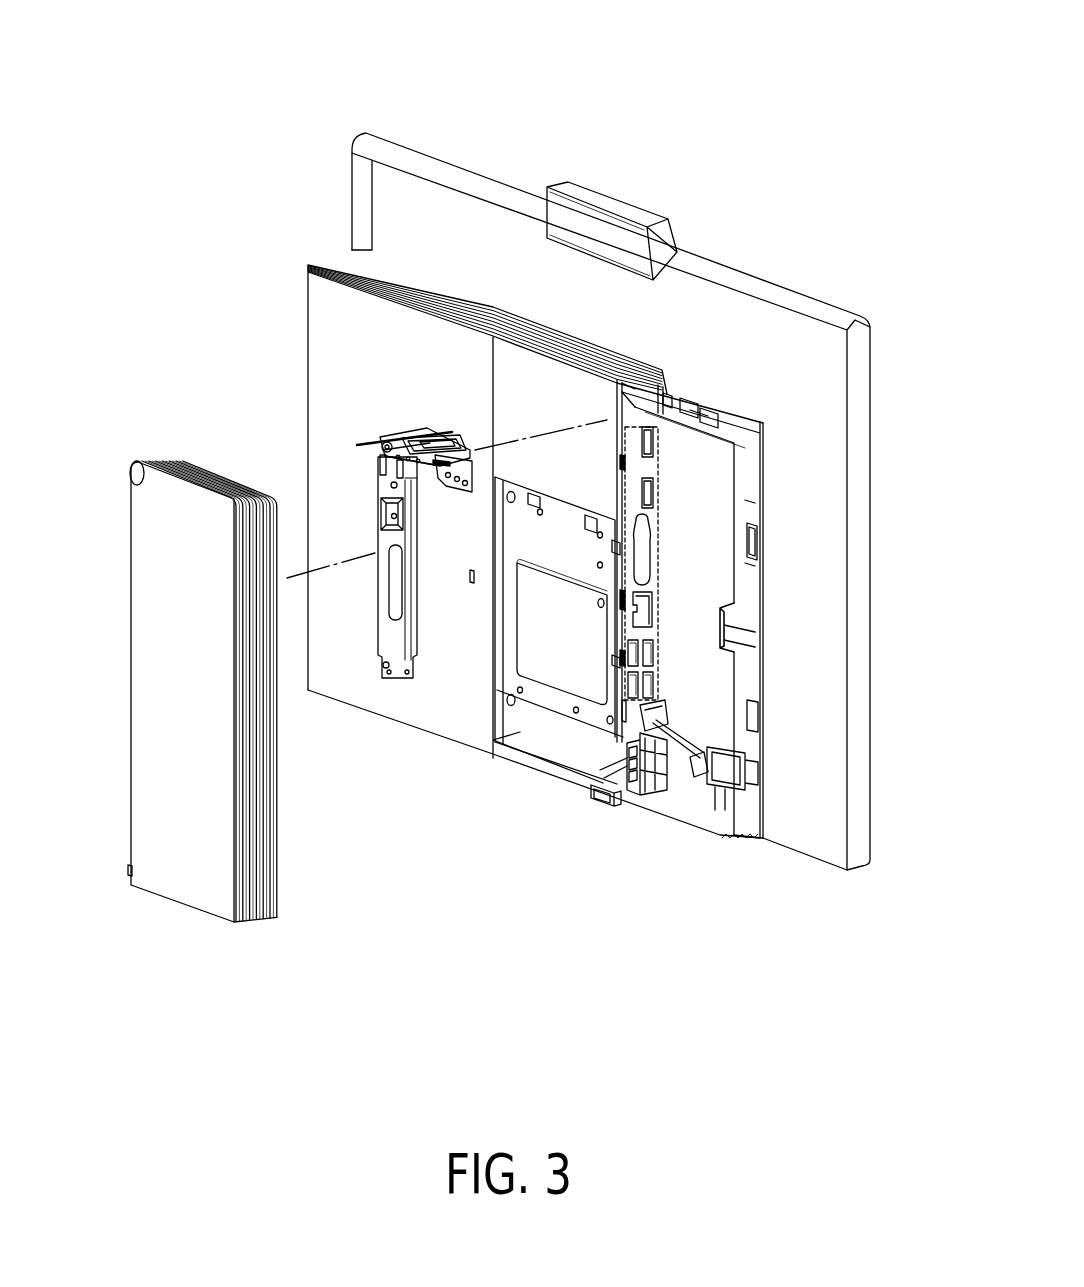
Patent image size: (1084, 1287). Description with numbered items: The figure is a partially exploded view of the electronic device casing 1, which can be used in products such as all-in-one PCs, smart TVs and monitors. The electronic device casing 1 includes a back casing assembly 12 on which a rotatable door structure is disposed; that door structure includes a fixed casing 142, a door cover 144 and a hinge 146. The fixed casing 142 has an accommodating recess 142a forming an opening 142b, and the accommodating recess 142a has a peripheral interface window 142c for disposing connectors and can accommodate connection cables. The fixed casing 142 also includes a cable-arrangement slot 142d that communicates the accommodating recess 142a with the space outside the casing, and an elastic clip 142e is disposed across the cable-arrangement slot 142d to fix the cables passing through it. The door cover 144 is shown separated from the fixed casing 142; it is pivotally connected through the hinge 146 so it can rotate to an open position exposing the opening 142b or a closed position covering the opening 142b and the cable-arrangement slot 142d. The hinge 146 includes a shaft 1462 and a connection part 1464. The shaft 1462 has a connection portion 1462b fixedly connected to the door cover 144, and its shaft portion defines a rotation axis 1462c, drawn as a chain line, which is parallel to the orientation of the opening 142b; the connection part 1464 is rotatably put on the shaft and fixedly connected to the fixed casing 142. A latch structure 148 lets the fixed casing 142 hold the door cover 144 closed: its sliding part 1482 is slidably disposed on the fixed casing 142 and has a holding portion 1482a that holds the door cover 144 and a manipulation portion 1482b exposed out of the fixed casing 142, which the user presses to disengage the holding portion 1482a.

The electronic device casing 1 is at (259, 66).
The back casing assembly 12 is at (307, 223).
The fixed casing 142 is at (585, 395).
The accommodating recess 142a is at (717, 577).
The opening 142b is at (737, 606).
The peripheral interface window 142c is at (660, 495).
The cable-arrangement slot 142d is at (618, 754).
The elastic clip 142e is at (651, 723).
The door cover 144 is at (148, 650).
The hinge 146 is at (375, 429).
The shaft 1462 is at (301, 404).
The connection portion 1462b is at (377, 466).
The rotation axis 1462c is at (440, 433).
The connection part 1464 is at (457, 487).
The latch structure 148 is at (705, 960).
The sliding part 1482 is at (614, 847).
The holding portion 1482a is at (630, 797).
The manipulation portion 1482b is at (603, 803).